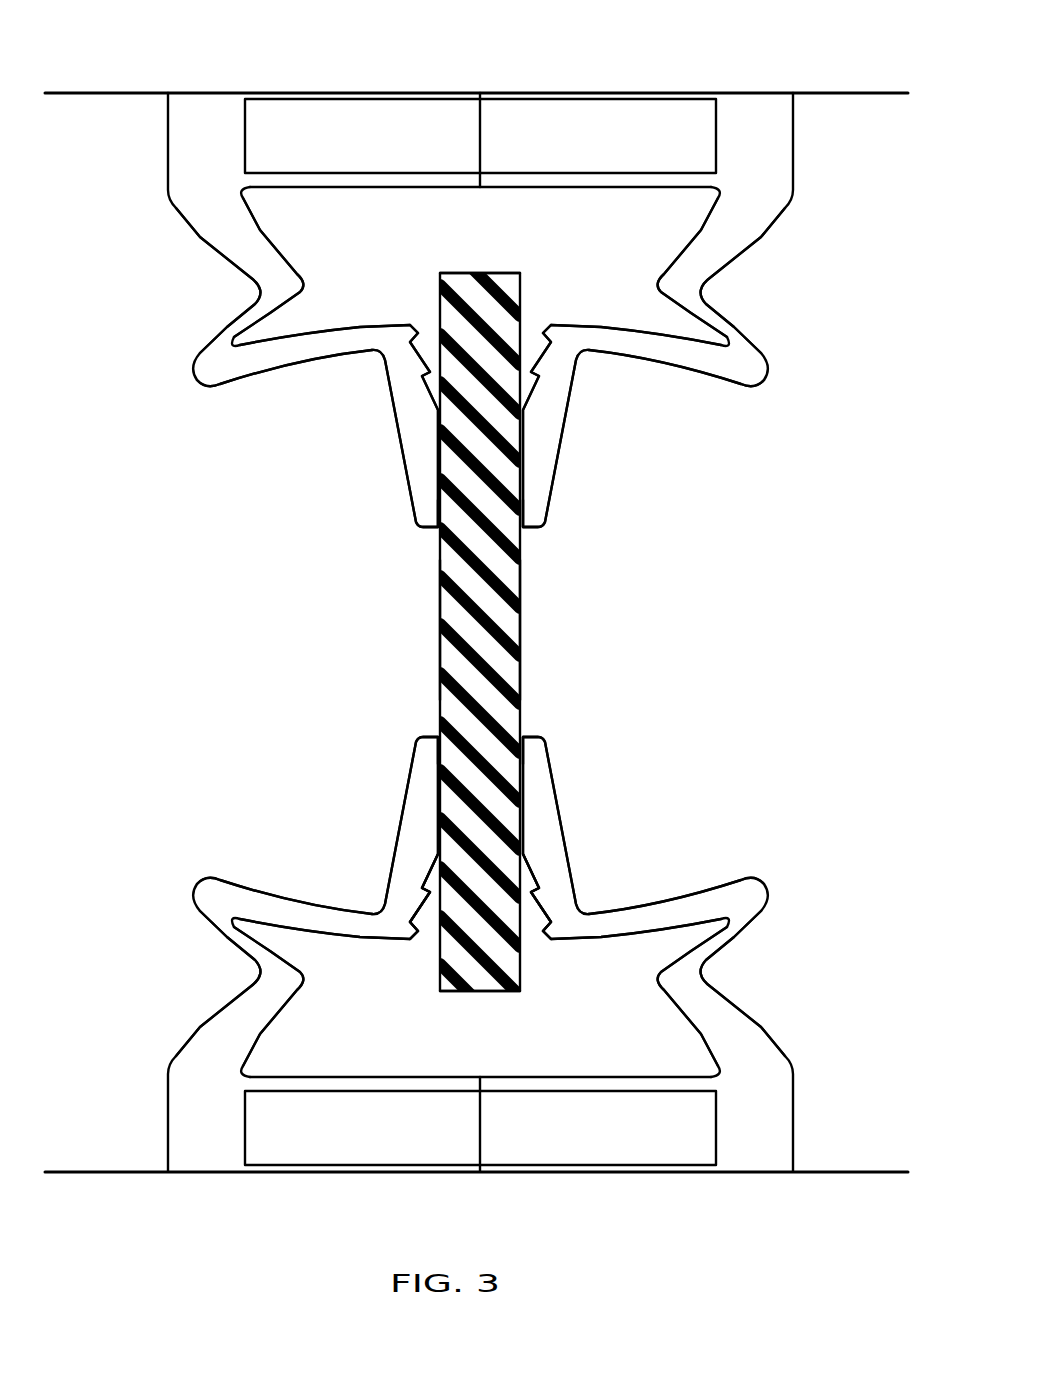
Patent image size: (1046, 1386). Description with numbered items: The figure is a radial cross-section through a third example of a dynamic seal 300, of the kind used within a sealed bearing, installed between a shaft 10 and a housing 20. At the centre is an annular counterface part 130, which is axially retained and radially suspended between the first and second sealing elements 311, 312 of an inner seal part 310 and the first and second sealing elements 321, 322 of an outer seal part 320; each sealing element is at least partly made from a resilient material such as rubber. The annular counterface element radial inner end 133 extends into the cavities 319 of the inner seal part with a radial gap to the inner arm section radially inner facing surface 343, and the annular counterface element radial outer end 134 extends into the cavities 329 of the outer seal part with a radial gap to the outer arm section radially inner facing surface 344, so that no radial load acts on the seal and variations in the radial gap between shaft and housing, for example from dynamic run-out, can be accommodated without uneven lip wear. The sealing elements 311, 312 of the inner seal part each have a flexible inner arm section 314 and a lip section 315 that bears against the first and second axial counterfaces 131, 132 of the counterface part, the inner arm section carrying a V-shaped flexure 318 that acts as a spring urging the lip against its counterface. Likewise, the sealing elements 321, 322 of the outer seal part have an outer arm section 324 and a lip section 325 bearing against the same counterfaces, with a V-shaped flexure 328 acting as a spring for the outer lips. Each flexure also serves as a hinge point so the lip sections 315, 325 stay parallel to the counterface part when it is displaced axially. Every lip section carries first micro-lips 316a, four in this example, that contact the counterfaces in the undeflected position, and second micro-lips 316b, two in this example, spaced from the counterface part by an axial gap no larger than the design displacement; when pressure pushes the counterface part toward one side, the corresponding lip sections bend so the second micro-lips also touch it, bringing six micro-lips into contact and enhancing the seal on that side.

The shaft 10 is at (818, 1173).
The housing 20 is at (201, 92).
The counterface part 130 is at (488, 575).
The first axial counterface 131 is at (429, 625).
The second axial counterface 132 is at (532, 625).
The annular counterface element radial inner end 133 is at (482, 1004).
The annular counterface element radial outer end 134 is at (482, 260).
The dynamic seal 300 is at (147, 700).
The inner seal part 310 is at (161, 1179).
The first sealing element 311 is at (209, 962).
The second sealing element 312 is at (752, 962).
The inner arm section 314 is at (254, 1013).
The lip sections 315 is at (415, 834).
The first micro-lips 316a is at (432, 483).
The second micro-lips 316b is at (430, 893).
The flexure 318 is at (215, 901).
The cavities 319 is at (645, 1060).
The outer seal part 320 is at (796, 91).
The first sealing element 321 is at (209, 302).
The second sealing element 322 is at (752, 302).
The outer arm section 324 is at (254, 251).
The lip sections 325 is at (415, 430).
The flexure 328 is at (215, 363).
The cavities 329 is at (363, 283).
The inner arm section radially inner facing surface 343 is at (480, 1064).
The outer arm section radially inner facing surface 344 is at (480, 200).